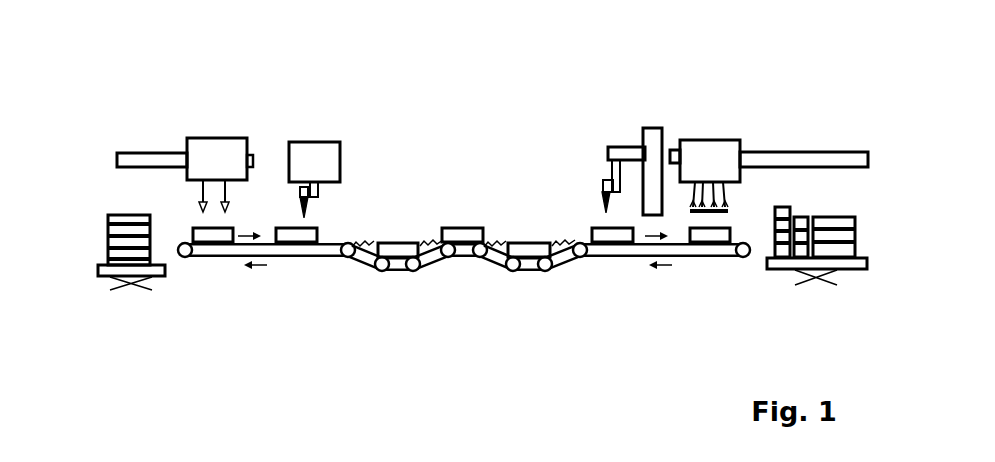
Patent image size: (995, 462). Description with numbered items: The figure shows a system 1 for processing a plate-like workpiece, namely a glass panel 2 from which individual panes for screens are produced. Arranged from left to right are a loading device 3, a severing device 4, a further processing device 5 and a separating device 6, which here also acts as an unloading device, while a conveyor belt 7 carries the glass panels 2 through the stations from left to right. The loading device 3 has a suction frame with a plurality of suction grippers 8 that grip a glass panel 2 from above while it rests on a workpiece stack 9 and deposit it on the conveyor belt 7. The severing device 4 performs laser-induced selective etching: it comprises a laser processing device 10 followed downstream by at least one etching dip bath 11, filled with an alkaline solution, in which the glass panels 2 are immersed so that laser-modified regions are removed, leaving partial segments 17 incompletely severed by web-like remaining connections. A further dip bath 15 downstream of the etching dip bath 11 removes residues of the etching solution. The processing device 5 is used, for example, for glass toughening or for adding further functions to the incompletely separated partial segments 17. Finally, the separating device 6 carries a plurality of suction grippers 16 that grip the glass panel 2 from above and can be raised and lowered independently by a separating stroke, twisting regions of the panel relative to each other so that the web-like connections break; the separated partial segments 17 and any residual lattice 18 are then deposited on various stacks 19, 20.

The system 1 is at (648, 53).
The glass panel 2 is at (112, 220).
The loading device 3 is at (185, 148).
The severing device 4 is at (381, 133).
The further processing device 5 is at (617, 152).
The separating device 6 is at (769, 148).
The conveyor belt 7 is at (310, 250).
The suction grippers 8 is at (197, 208).
The workpiece stack 9 is at (80, 255).
The laser processing device 10 is at (317, 160).
The etching dip bath 11 is at (423, 243).
The further dip bath 15 is at (503, 243).
The suction grippers 16 is at (727, 210).
The partial segments 17 is at (792, 212).
The residual lattice 18 is at (847, 223).
The stack 19 is at (760, 250).
The stack 20 is at (872, 248).